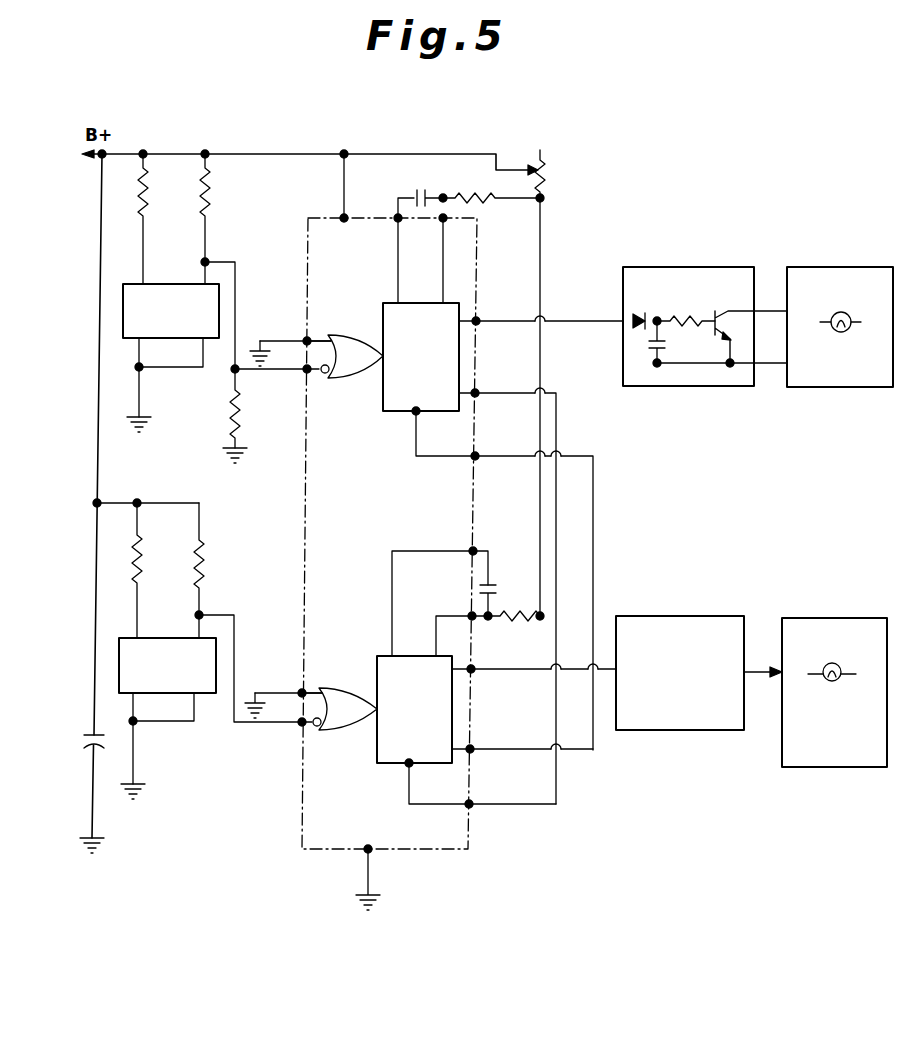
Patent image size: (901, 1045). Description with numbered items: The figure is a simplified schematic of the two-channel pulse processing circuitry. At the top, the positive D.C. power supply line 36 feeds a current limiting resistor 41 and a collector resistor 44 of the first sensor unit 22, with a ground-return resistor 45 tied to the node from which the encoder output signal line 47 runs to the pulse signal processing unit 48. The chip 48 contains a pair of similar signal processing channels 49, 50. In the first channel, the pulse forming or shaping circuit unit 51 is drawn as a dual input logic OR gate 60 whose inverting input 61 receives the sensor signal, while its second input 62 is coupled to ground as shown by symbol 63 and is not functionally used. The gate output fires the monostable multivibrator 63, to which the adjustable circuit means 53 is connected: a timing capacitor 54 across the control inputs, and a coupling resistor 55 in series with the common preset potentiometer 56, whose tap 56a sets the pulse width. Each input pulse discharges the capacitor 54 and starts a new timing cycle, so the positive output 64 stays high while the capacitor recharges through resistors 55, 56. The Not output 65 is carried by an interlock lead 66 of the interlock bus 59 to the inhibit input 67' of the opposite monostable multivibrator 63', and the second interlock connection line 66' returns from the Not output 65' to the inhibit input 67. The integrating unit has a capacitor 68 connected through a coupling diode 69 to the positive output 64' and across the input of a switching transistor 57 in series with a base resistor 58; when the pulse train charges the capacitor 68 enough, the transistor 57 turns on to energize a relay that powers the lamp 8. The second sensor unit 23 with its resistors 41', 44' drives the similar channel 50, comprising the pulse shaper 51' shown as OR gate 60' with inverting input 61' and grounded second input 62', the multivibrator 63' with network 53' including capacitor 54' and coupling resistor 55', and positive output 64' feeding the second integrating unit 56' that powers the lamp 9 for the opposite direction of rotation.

The positive D.C. power supply line 36 is at (138, 154).
The current limiting resistor 41 is at (163, 217).
The collector resistor 44 is at (227, 217).
The sensor unit 22 is at (172, 284).
The encoder output signal line 47 is at (240, 290).
The ground-return resistor 45 is at (230, 405).
The pulse signal processing unit 48 is at (300, 490).
The signal processing channel 49 is at (368, 430).
The signal processing channel 50 is at (350, 620).
The pulse forming or shaping circuit unit 51 is at (345, 322).
The second input 62 is at (299, 320).
The monostable multivibrator 63 is at (354, 357).
The dual input logic OR gate 60 is at (339, 390).
The inverting input 61 is at (343, 406).
The adjustable circuit means 53 is at (393, 226).
The capacitor 54 is at (436, 183).
The coupling resistor 55 is at (491, 208).
The preset potentiometer 56 is at (562, 383).
The tap 56a is at (533, 168).
The positive output 64 is at (536, 289).
The Not output 65 is at (493, 596).
The inhibit input 67 is at (485, 578).
The interlock lead 66 is at (574, 521).
The interlock connection line 66' is at (616, 535).
The switching transistor 57 is at (690, 388).
The coupling diode 69 is at (636, 311).
The interlock bus 59 is at (690, 310).
The base resistor 58 is at (720, 336).
The capacitor 68 is at (646, 345).
The lamp 8 is at (851, 318).
The current limiting resistor 41' is at (148, 568).
The collector resistor 44' is at (225, 570).
The sensor unit 23 is at (190, 608).
The pulse forming or shaping circuit unit 51' is at (339, 678).
The second input 62' is at (297, 674).
The dual input logic OR gate 60' is at (330, 751).
The inverting input 61' is at (320, 766).
The monostable multivibrator 63' is at (348, 709).
The adjustable circuit means 53' is at (455, 585).
The capacitor 54' is at (503, 590).
The coupling resistor 55' is at (490, 633).
The positive output 64' is at (527, 648).
The Not output 65' is at (511, 772).
The inhibit input 67' is at (458, 783).
The integrating unit 56' is at (699, 647).
The lamp 9 is at (841, 668).